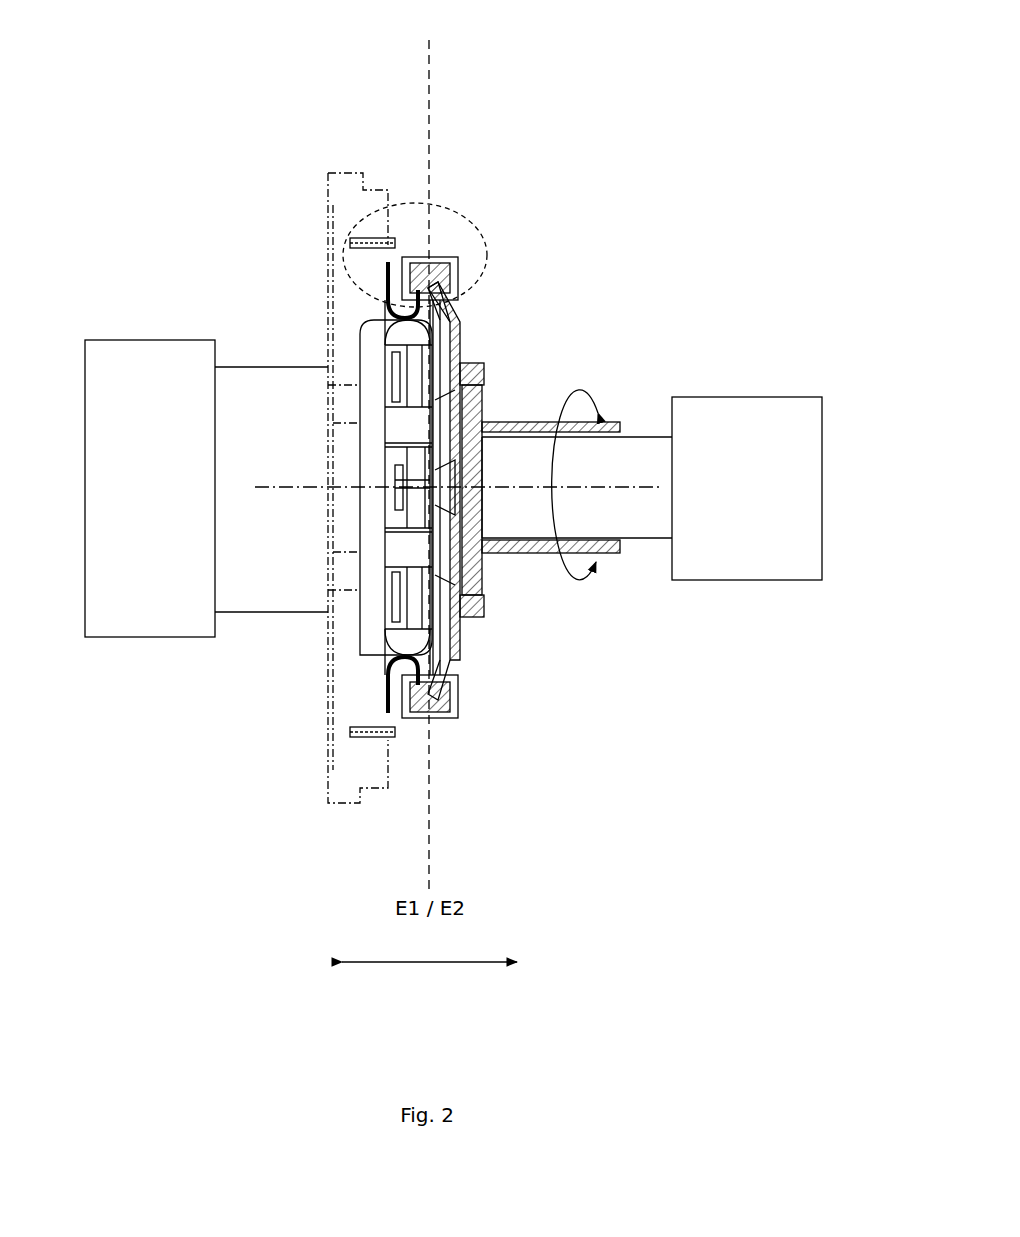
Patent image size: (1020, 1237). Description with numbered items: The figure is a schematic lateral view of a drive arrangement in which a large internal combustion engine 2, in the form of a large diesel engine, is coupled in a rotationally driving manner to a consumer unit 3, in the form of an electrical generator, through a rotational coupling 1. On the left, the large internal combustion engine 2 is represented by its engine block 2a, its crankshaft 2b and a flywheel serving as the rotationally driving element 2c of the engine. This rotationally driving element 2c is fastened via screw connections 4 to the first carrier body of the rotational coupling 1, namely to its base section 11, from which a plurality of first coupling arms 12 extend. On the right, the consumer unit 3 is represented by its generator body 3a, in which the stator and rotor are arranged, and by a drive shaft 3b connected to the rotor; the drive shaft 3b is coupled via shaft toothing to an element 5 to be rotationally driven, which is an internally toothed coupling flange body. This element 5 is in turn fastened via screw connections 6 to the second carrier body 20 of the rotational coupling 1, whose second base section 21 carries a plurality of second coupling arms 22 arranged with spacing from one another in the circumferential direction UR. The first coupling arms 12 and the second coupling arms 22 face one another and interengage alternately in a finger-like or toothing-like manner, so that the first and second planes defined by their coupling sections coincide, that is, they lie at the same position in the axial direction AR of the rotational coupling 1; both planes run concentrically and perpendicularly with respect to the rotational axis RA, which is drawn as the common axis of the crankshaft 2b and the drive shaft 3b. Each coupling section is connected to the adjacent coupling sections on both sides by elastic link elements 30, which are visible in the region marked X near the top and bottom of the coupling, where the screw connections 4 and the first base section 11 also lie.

The rotational coupling 1 is at (527, 782).
The large internal combustion engine 2 is at (218, 88).
The engine block 2a is at (158, 355).
The crankshaft 2b is at (260, 385).
The rotationally driving element 2c is at (330, 195).
The consumer unit 3 is at (756, 330).
The generator body 3a is at (759, 567).
The drive shaft 3b is at (651, 522).
The screw connections 4 is at (365, 238).
The element to be rotationally driven 5 is at (520, 424).
The screw connections 6 is at (487, 372).
The base section 11 is at (375, 340).
The first coupling arms 12 is at (398, 645).
The second carrier body 20 is at (458, 318).
The second base section 21 is at (467, 632).
The second coupling arms 22 is at (460, 672).
The elastic link elements 30 is at (415, 256).
The detail region X is at (471, 222).
The rotational axis RA is at (625, 487).
The circumferential direction UR is at (594, 568).
The axial direction AR is at (429, 979).